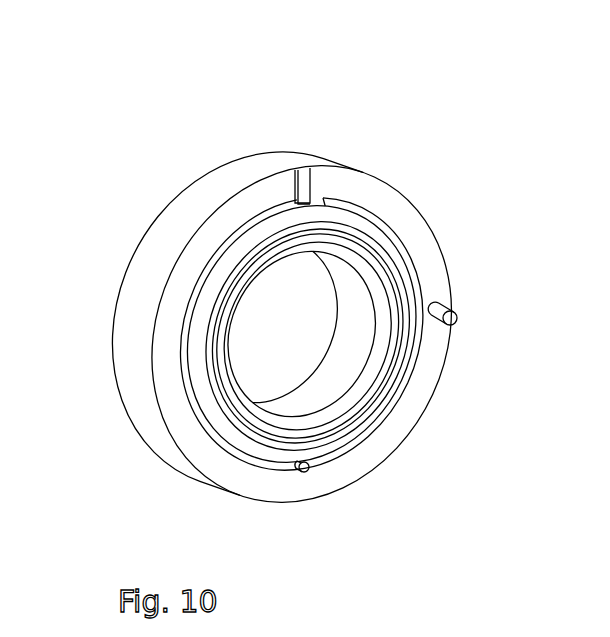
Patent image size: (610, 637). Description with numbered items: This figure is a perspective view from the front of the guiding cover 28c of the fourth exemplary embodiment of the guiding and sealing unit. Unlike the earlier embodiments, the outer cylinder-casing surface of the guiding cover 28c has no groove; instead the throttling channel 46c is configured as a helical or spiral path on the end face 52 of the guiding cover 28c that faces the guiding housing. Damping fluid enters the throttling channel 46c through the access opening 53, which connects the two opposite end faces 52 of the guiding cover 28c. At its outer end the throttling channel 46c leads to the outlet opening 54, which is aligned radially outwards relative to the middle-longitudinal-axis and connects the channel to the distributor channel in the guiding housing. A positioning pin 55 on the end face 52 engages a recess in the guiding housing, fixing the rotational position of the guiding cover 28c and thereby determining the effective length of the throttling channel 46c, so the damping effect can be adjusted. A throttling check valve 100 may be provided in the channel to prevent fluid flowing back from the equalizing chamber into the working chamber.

The guiding cover 28c is at (234, 128).
The end face 52 is at (360, 190).
The outlet opening 54 is at (300, 183).
The throttling channel 46c is at (393, 235).
The positioning pin 55 is at (457, 318).
The access opening 53 is at (304, 473).
The throttling check valve 100 is at (268, 463).